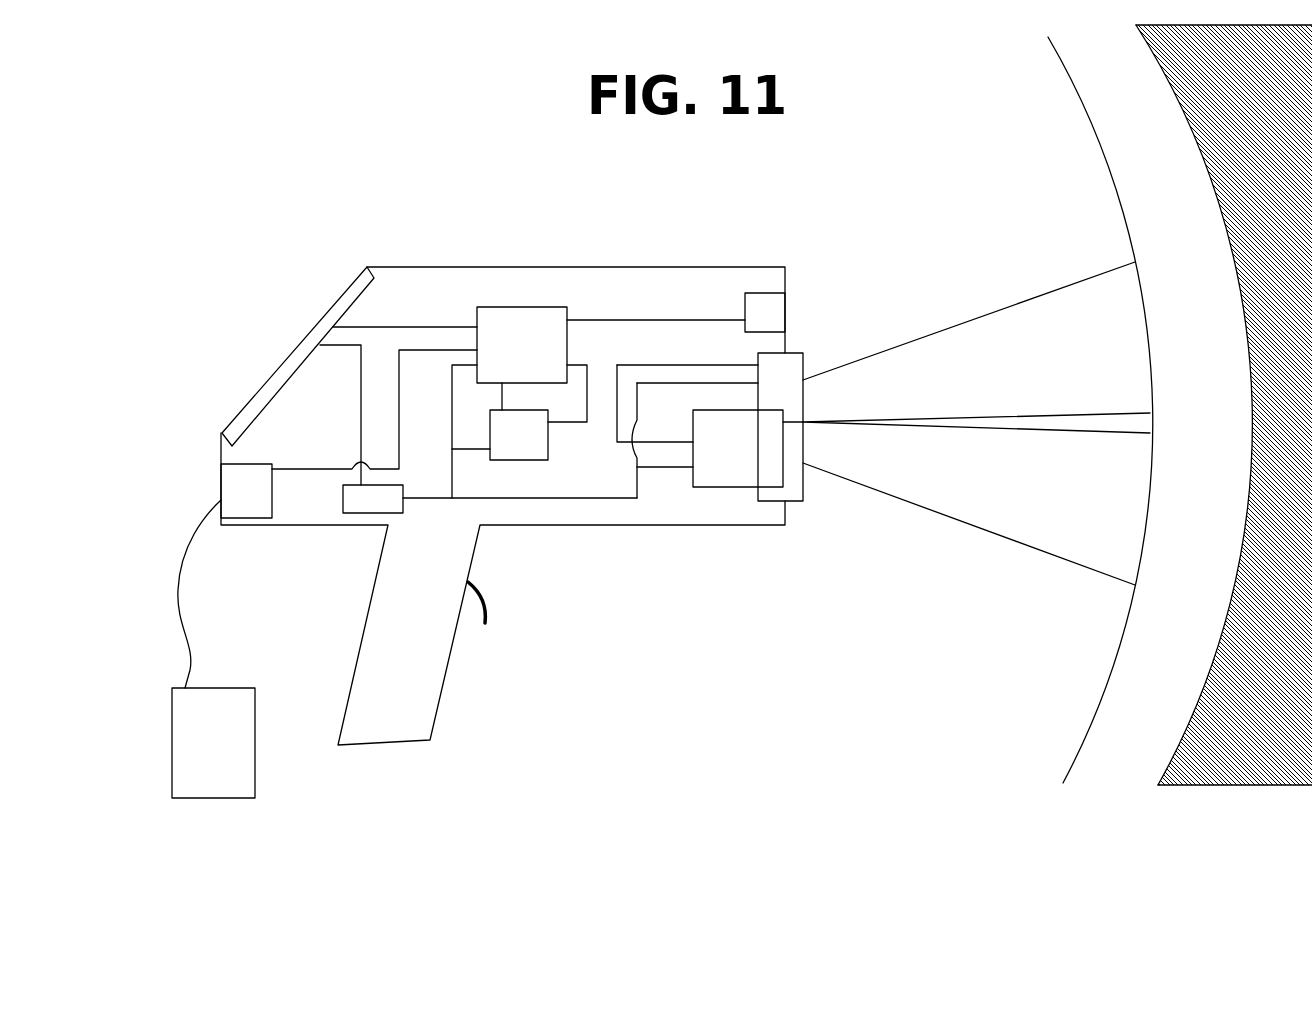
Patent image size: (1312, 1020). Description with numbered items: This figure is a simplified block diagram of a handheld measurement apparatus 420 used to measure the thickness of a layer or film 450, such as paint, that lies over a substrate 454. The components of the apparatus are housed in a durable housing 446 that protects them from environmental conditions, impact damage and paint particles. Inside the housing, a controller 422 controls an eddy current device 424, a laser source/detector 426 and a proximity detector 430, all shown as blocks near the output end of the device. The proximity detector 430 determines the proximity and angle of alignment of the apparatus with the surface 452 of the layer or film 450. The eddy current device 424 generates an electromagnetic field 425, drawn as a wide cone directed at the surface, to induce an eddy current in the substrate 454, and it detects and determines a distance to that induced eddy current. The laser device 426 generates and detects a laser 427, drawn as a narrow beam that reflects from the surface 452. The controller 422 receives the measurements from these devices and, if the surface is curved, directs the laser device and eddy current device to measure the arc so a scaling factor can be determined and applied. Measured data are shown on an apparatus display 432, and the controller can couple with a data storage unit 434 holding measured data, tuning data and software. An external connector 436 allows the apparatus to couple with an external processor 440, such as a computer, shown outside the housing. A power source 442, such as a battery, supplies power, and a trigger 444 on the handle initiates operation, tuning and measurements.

The apparatus 420 is at (465, 220).
The controller 422 is at (545, 307).
The eddy current device 424 is at (795, 353).
The electromagnetic field 425 is at (985, 310).
The laser source/detector 426 is at (722, 480).
The laser 427 is at (1073, 430).
The proximity detector 430 is at (755, 293).
The apparatus display 432 is at (305, 345).
The data storage unit 434 is at (532, 452).
The external connector 436 is at (228, 479).
The external processor 440 is at (243, 777).
The power source 442 is at (345, 505).
The trigger 444 is at (492, 620).
The housing 446 is at (398, 265).
The layer or film 450 is at (1097, 760).
The surface 452 is at (1102, 703).
The substrate 454 is at (1267, 128).